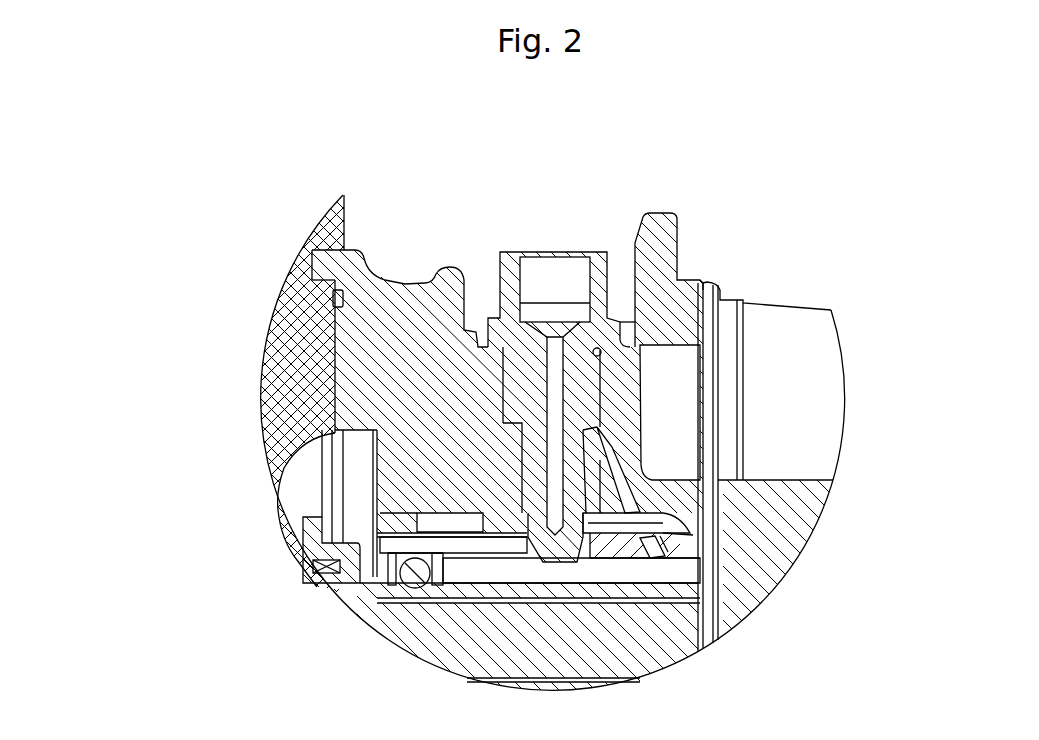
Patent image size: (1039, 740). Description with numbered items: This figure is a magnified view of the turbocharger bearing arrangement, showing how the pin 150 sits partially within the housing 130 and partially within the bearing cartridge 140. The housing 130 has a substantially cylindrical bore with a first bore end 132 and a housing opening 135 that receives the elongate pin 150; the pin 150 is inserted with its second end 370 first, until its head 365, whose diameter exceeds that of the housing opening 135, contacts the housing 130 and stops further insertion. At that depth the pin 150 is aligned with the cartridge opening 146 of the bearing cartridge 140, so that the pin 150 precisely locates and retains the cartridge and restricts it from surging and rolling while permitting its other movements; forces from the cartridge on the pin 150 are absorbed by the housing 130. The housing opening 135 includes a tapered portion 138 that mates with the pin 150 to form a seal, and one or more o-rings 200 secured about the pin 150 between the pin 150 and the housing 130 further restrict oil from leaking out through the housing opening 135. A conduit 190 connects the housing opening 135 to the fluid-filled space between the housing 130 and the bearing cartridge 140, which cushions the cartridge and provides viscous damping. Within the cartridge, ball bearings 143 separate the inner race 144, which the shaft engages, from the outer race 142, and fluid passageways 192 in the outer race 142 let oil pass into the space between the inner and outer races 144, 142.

The housing 130 is at (384, 272).
The first bore end 132 is at (332, 372).
The housing opening 135 is at (510, 450).
The tapered portion 138 is at (590, 488).
The bearing cartridge 140 is at (645, 550).
The outer race 142 is at (408, 532).
The ball bearings 143 is at (408, 578).
The inner race 144 is at (410, 598).
The cartridge opening 146 is at (582, 548).
The pin 150 is at (600, 250).
The conduit 190 is at (617, 473).
The fluid passageways 192 is at (688, 550).
The o-rings 200 is at (597, 350).
The head 365 is at (622, 322).
The second end 370 is at (523, 552).